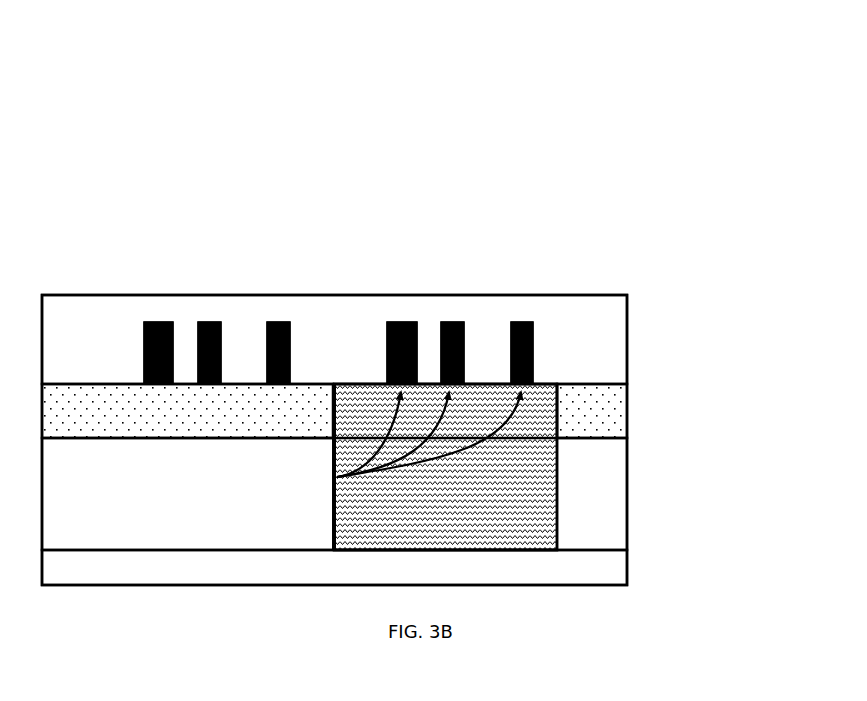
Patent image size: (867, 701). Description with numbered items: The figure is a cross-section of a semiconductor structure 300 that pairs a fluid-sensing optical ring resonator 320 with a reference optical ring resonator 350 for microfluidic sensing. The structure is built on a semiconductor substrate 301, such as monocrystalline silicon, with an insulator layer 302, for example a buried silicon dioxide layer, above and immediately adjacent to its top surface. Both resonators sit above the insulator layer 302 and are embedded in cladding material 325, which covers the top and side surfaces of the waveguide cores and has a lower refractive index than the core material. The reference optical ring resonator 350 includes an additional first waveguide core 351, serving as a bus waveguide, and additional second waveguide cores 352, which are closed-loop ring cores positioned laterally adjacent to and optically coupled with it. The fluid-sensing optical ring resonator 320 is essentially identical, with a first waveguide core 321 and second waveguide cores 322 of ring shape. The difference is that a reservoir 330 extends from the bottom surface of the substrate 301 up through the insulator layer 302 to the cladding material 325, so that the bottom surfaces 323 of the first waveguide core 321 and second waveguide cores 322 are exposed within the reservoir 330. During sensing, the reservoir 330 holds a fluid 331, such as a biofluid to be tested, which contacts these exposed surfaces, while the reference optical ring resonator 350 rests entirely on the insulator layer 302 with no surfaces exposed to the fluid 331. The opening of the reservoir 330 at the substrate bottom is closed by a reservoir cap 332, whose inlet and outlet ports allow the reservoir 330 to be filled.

The semiconductor structure 300 is at (578, 84).
The reference optical ring resonator 350 is at (278, 233).
The additional first waveguide core 351 is at (148, 322).
The additional second waveguide cores 352 is at (291, 315).
The fluid-sensing optical ring resonator 320 is at (520, 237).
The first waveguide core 321 is at (392, 322).
The second waveguide cores 322 is at (537, 315).
The bottom surfaces 323 is at (337, 477).
The cladding material 325 is at (628, 332).
The insulator layer 302 is at (628, 412).
The reservoir 330 is at (557, 465).
The fluid 331 is at (543, 488).
The semiconductor substrate 301 is at (628, 535).
The reservoir cap 332 is at (628, 578).